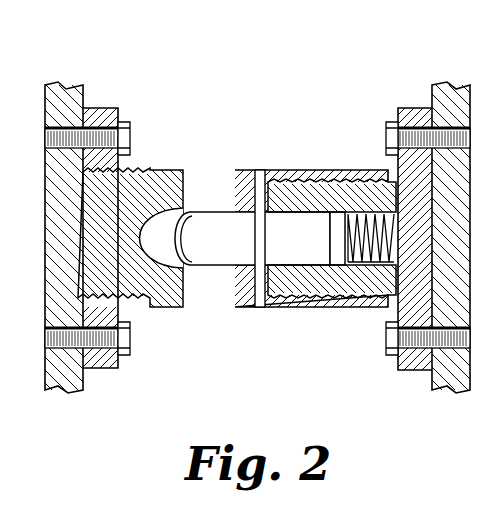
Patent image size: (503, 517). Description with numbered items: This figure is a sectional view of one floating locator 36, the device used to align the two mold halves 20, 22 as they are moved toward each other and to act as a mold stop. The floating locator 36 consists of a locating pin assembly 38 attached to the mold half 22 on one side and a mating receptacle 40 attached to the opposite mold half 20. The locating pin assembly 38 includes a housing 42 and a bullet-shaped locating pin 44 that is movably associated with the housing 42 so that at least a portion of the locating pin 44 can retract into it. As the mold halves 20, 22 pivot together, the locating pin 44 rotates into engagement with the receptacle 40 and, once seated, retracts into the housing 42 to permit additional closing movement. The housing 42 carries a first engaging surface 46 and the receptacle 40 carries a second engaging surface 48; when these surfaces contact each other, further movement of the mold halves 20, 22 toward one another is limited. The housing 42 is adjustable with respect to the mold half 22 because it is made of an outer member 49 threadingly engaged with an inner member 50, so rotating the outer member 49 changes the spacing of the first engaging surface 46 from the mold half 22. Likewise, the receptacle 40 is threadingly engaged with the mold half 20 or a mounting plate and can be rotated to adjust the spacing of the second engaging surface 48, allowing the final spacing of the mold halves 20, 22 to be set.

The mold half 20 is at (63, 392).
The mold half 22 is at (450, 392).
The floating locator 36 is at (318, 56).
The locating pin assembly 38 is at (332, 112).
The mating receptacle 40 is at (167, 170).
The housing 42 is at (355, 170).
The locating pin 44 is at (200, 211).
The first engaging surface 46 is at (227, 303).
The second engaging surface 48 is at (193, 303).
The outer member 49 is at (278, 170).
The inner member 50 is at (243, 170).